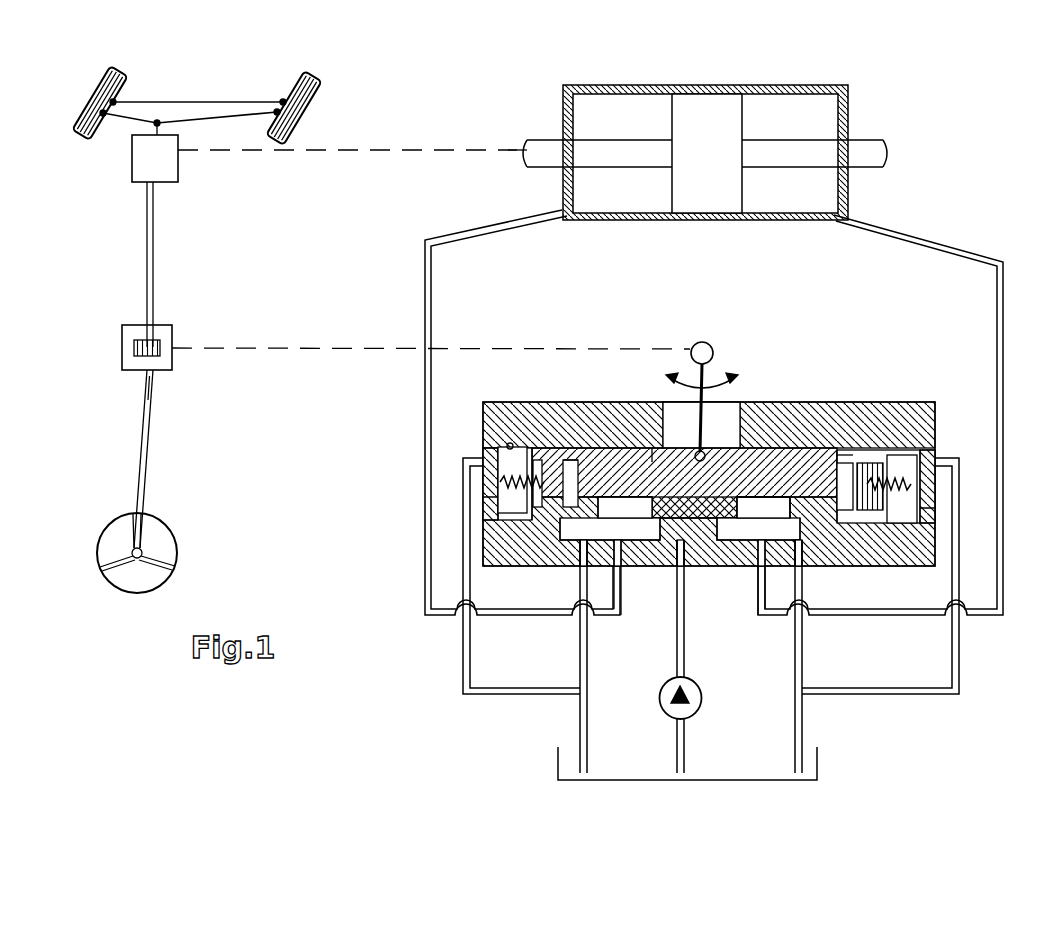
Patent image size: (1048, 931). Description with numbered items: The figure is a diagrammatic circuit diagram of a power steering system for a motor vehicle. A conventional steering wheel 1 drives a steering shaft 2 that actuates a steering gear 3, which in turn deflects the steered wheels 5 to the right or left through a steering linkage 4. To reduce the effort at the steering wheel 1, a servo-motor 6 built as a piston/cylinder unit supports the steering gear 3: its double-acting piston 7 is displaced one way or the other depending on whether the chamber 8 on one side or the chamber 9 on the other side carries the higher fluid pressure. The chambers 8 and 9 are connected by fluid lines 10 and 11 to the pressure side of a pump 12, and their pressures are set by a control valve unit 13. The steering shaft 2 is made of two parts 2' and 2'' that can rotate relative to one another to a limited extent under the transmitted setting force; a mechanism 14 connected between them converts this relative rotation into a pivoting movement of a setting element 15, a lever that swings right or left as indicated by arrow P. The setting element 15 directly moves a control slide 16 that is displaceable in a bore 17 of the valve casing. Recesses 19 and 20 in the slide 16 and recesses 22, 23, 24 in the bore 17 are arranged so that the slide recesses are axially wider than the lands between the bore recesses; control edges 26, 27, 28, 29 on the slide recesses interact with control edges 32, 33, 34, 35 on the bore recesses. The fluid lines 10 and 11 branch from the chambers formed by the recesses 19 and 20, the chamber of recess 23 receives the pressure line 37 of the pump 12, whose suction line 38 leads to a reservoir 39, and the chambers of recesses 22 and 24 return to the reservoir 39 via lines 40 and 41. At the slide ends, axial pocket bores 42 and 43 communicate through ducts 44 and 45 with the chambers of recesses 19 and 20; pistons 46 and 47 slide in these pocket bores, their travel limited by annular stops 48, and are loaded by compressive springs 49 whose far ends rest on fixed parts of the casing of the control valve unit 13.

The steering wheel 1 is at (177, 548).
The steering shaft 2 is at (172, 386).
The steering shaft part 2' is at (163, 459).
The steering shaft part 2'' is at (175, 264).
The steering gear 3 is at (155, 158).
The steering linkage 4 is at (218, 119).
The steered wheels 5 is at (122, 80).
The servo-motor 6 is at (737, 84).
The double-acting piston 7 is at (707, 153).
The chamber 8 is at (590, 137).
The chamber 9 is at (814, 137).
The fluid line 10 is at (432, 298).
The fluid line 11 is at (1003, 306).
The pump 12 is at (702, 697).
The control valve unit 13 is at (840, 400).
The mechanism 14 is at (160, 334).
The setting element 15 is at (709, 346).
The control slide 16 is at (610, 450).
The bore 17 is at (510, 442).
The recess 19 is at (624, 548).
The recess 20 is at (746, 530).
The recess 22 is at (570, 520).
The recess 23 is at (688, 545).
The recess 24 is at (805, 545).
The control edge 26 is at (540, 520).
The control edge 27 is at (657, 490).
The control edge 28 is at (701, 425).
The control edge 29 is at (866, 515).
The control edge 32 is at (592, 545).
The control edge 33 is at (644, 540).
The control edge 34 is at (730, 544).
The control edge 35 is at (768, 545).
The pressure line 37 is at (684, 640).
The suction line 38 is at (684, 748).
The reservoir 39 is at (747, 773).
The line 40 is at (587, 672).
The line 41 is at (802, 666).
The axial pocket bore 42 is at (849, 457).
The axial pocket bore 43 is at (568, 456).
The duct 44 is at (800, 472).
The duct 45 is at (651, 462).
The piston 46 is at (900, 523).
The piston 47 is at (515, 535).
The annular stop 48 is at (505, 492).
The compressive spring 49 is at (503, 460).
The arrow P is at (706, 386).